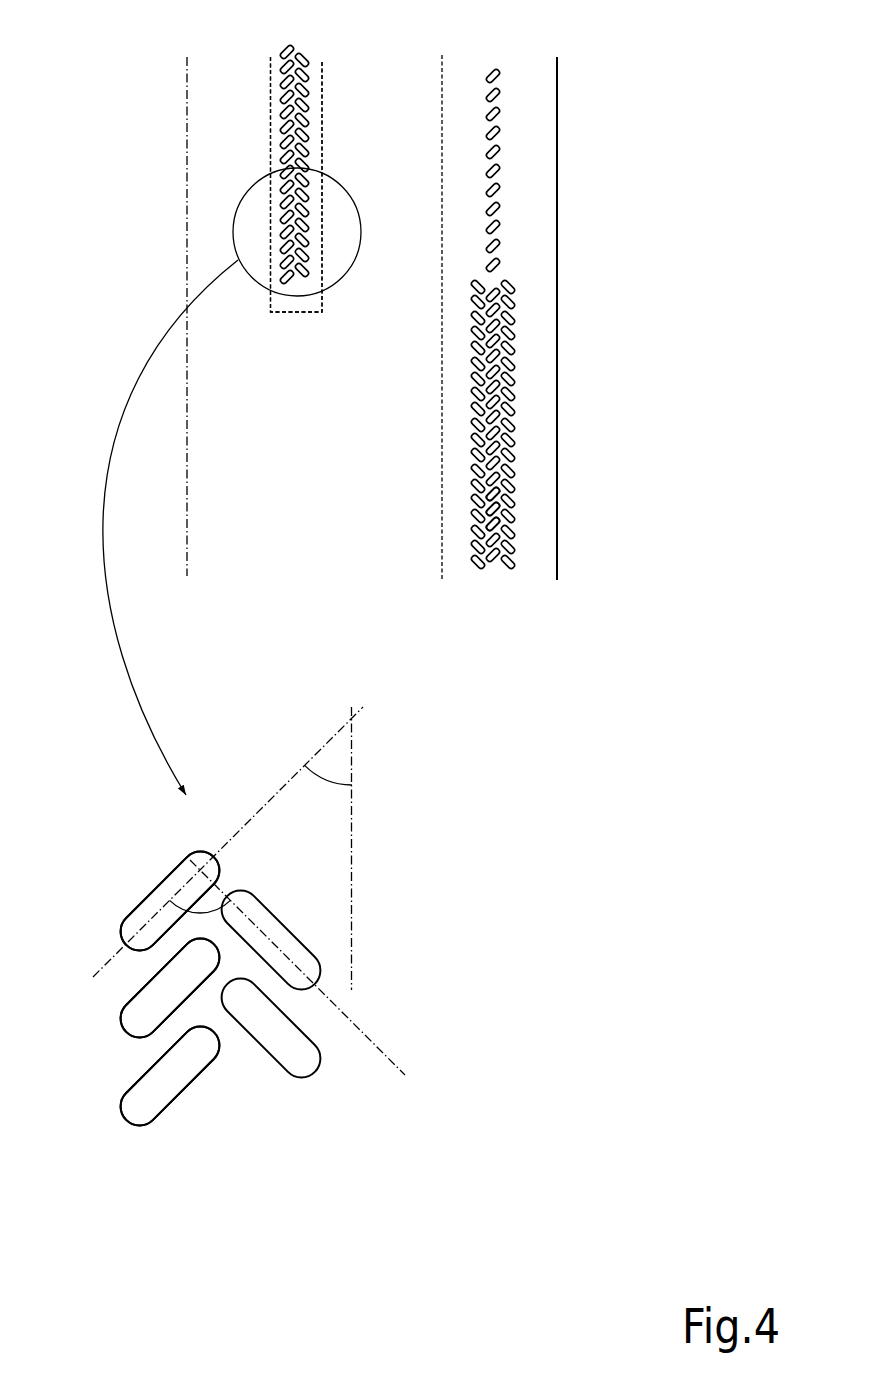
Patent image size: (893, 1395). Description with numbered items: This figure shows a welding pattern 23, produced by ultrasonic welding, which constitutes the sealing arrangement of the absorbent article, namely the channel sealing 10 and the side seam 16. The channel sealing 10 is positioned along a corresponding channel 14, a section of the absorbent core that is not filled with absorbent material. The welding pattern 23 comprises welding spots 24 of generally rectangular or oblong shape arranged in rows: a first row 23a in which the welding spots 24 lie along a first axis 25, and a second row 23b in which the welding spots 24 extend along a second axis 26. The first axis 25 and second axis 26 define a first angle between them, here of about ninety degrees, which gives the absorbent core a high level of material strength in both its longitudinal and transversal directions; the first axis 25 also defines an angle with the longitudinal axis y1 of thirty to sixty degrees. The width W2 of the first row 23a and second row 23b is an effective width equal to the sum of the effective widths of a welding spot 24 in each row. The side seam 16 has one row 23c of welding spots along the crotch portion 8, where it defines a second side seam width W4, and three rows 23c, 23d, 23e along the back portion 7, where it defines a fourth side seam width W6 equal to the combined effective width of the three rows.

The back portion 7 is at (624, 399).
The crotch portion 8 is at (615, 89).
The channel sealing 10 is at (275, 80).
The channel 14 is at (272, 152).
The side seam 16 is at (515, 516).
The welding pattern 23 is at (482, 245).
The first row 23a is at (288, 49).
The second row 23b is at (303, 61).
The third row 23c is at (497, 65).
The row of welding spots 23d is at (473, 569).
The row of welding spots 23e is at (506, 569).
The welding spots 24 is at (138, 953).
The first axis 25 is at (110, 962).
The second axis 26 is at (383, 1050).
The width of the first row and the second row W2 is at (233, 117).
The second side seam width W4 is at (430, 137).
The fourth side seam width W6 is at (418, 467).
The longitudinal axis y1 is at (352, 858).